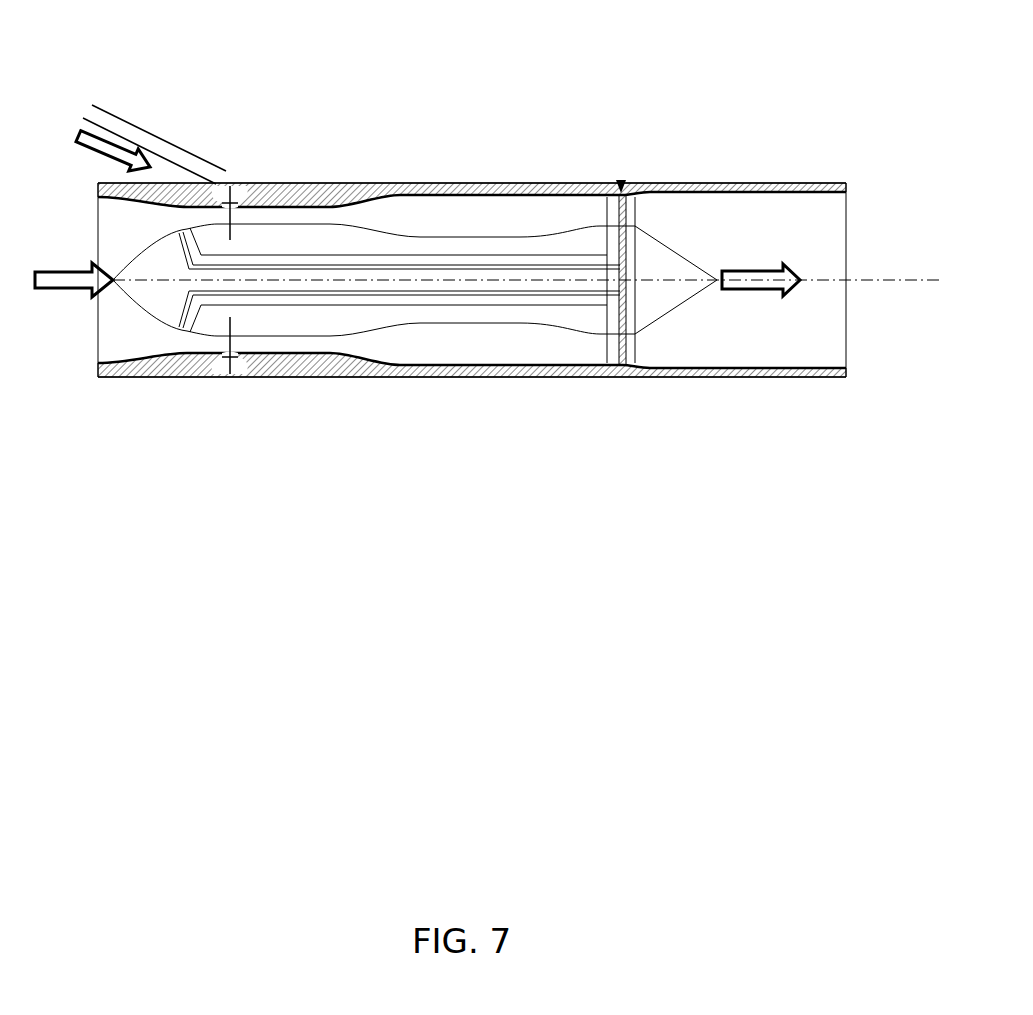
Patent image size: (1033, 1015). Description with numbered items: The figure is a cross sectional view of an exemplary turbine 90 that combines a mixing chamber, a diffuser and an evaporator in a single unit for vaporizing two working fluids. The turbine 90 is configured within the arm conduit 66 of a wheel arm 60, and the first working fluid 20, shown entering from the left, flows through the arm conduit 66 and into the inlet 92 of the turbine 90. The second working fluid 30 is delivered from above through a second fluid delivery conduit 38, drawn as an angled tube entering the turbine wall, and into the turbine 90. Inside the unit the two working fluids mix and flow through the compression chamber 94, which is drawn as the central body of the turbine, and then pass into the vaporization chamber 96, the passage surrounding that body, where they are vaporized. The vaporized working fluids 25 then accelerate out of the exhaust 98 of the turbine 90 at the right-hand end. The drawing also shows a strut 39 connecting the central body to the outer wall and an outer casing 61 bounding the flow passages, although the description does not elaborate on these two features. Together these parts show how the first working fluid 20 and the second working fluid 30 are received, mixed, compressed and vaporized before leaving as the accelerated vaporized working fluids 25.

The first working fluid 20 is at (120, 300).
The vaporized working fluids 25 is at (770, 288).
The second working fluid 30 is at (103, 115).
The second fluid delivery conduit 38 is at (138, 137).
The strut 39 is at (230, 182).
The wheel arm 60 is at (633, 183).
The outer casing 61 is at (515, 190).
The arm conduit 66 is at (118, 330).
The turbine 90 is at (566, 226).
The inlet 92 is at (107, 250).
The compression chamber 94 is at (325, 262).
The vaporization chamber 96 is at (463, 222).
The exhaust 98 is at (783, 215).